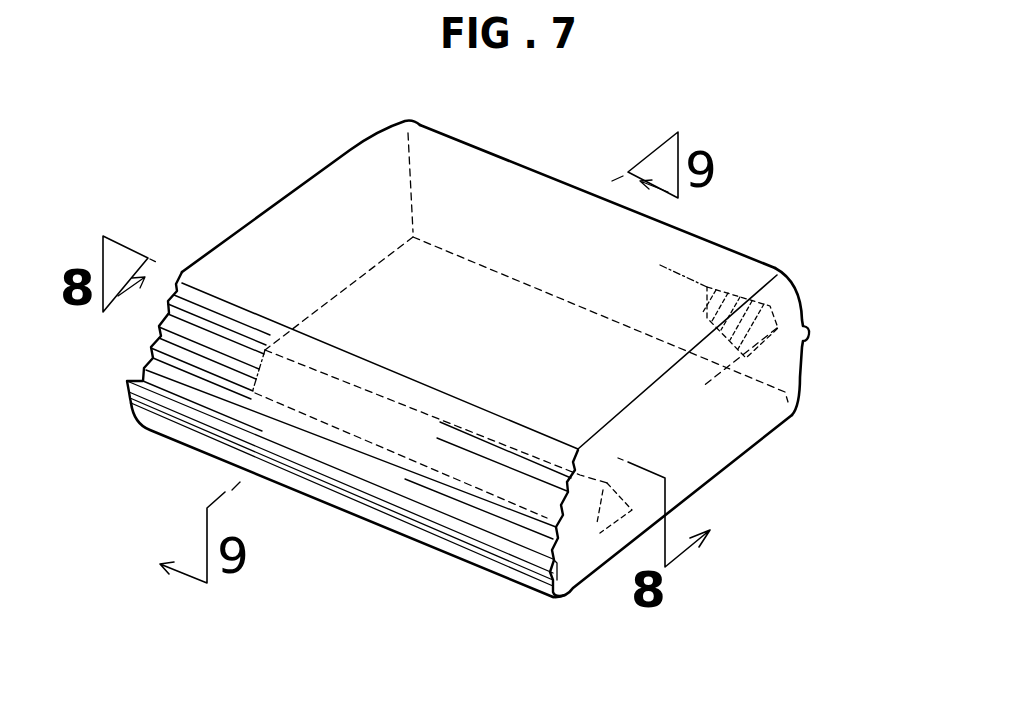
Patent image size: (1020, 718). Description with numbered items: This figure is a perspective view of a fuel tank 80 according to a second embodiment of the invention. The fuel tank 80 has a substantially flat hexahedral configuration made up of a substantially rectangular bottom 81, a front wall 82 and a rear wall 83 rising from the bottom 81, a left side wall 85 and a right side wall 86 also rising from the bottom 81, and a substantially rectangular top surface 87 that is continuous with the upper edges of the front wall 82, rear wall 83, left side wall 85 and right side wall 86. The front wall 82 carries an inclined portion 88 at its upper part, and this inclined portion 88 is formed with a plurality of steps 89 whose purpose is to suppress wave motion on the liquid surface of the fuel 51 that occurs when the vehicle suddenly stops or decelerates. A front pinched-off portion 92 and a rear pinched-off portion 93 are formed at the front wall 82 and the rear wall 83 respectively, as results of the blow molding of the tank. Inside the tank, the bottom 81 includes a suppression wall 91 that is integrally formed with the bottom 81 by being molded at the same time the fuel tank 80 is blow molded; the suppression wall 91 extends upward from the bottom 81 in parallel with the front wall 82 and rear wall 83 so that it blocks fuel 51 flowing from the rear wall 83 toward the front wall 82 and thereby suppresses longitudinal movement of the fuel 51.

The fuel tank 80 is at (212, 72).
The bottom 81 is at (764, 436).
The front wall 82 is at (127, 382).
The rear wall 83 is at (804, 368).
The left side wall 85 is at (728, 434).
The right side wall 86 is at (262, 212).
The top surface 87 is at (316, 197).
The inclined portion 88 is at (139, 372).
The steps 89 is at (206, 395).
The suppression wall 91 is at (600, 503).
The front pinched-off portion 92 is at (420, 523).
The rear pinched-off portion 93 is at (806, 328).
The fuel 51 is at (728, 294).